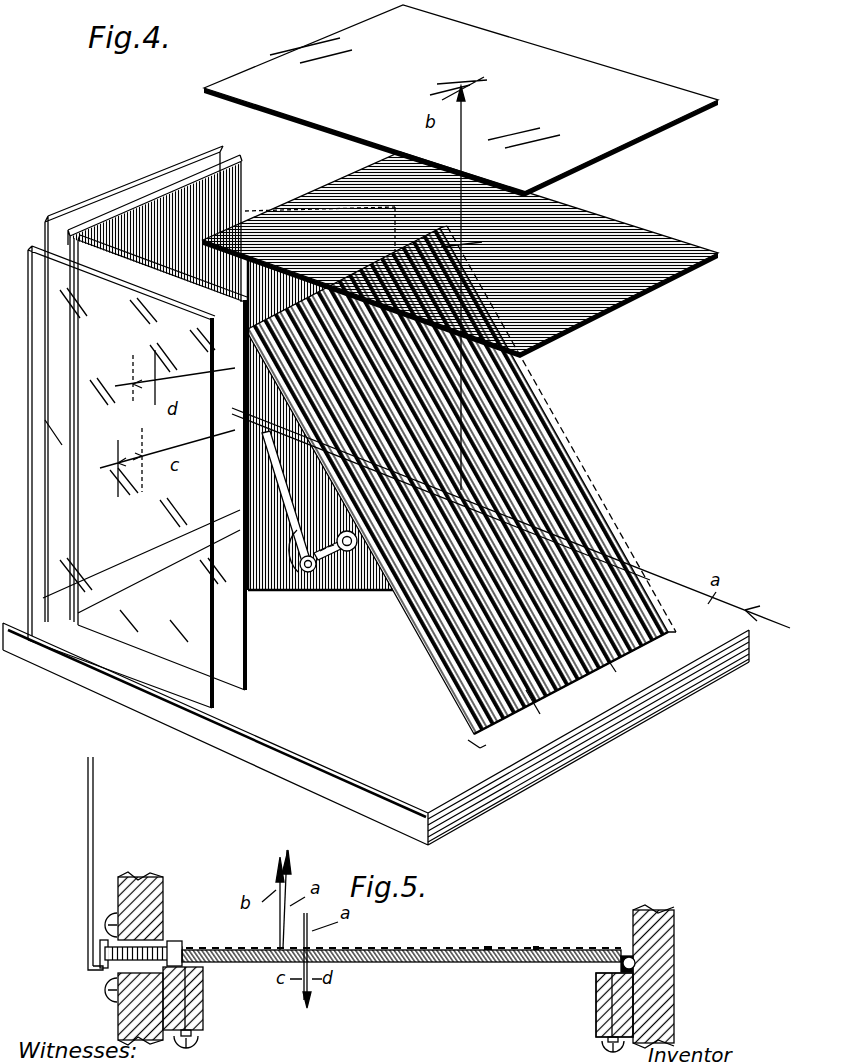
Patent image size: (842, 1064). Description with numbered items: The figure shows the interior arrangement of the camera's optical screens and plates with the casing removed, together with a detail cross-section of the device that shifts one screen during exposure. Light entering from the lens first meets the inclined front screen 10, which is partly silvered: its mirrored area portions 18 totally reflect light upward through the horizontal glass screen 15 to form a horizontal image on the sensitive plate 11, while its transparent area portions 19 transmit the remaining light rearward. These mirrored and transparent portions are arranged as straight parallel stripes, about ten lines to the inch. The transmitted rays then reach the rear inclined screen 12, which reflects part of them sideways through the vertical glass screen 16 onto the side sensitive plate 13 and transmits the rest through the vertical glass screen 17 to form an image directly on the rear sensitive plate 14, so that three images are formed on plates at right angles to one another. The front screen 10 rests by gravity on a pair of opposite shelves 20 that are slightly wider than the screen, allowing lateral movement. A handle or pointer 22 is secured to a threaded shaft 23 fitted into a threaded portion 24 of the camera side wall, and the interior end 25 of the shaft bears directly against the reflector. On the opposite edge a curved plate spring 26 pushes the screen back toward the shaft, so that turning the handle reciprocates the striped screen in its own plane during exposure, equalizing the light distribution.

In FIG. 4, the front screen 10 is at (556, 476).
In FIG. 5, the front screen 10 is at (258, 963).
In FIG. 4, the sensitive film or plate 11 is at (624, 130).
In FIG. 4, the rear inclined screen 12 is at (270, 570).
In FIG. 4, the sensitive plate 13 is at (215, 701).
In FIG. 4, the rear sensitive plate 14 is at (110, 198).
In FIG. 4, the screen 15 is at (628, 276).
In FIG. 4, the screen 16 is at (249, 663).
In FIG. 4, the screen 17 is at (233, 190).
In FIG. 4, the mirrored area portions 18 is at (528, 692).
In FIG. 5, the mirrored area portions 18 is at (506, 955).
In FIG. 4, the transparent area portions 19 is at (603, 652).
In FIG. 5, the transparent area portions 19 is at (548, 955).
In FIG. 4, the shelves 20 is at (472, 716).
In FIG. 4, the handle or pointer 22 is at (324, 586).
In FIG. 5, the handle or pointer 22 is at (88, 829).
In FIG. 4, the threaded shaft 23 is at (352, 586).
In FIG. 5, the threaded shaft 23 is at (104, 978).
In FIG. 4, the threaded portion 24 is at (330, 578).
In FIG. 5, the threaded portion 24 is at (148, 918).
In FIG. 5, the interior end 25 is at (181, 942).
In FIG. 4, the plate spring 26 is at (603, 497).
In FIG. 5, the plate spring 26 is at (628, 957).